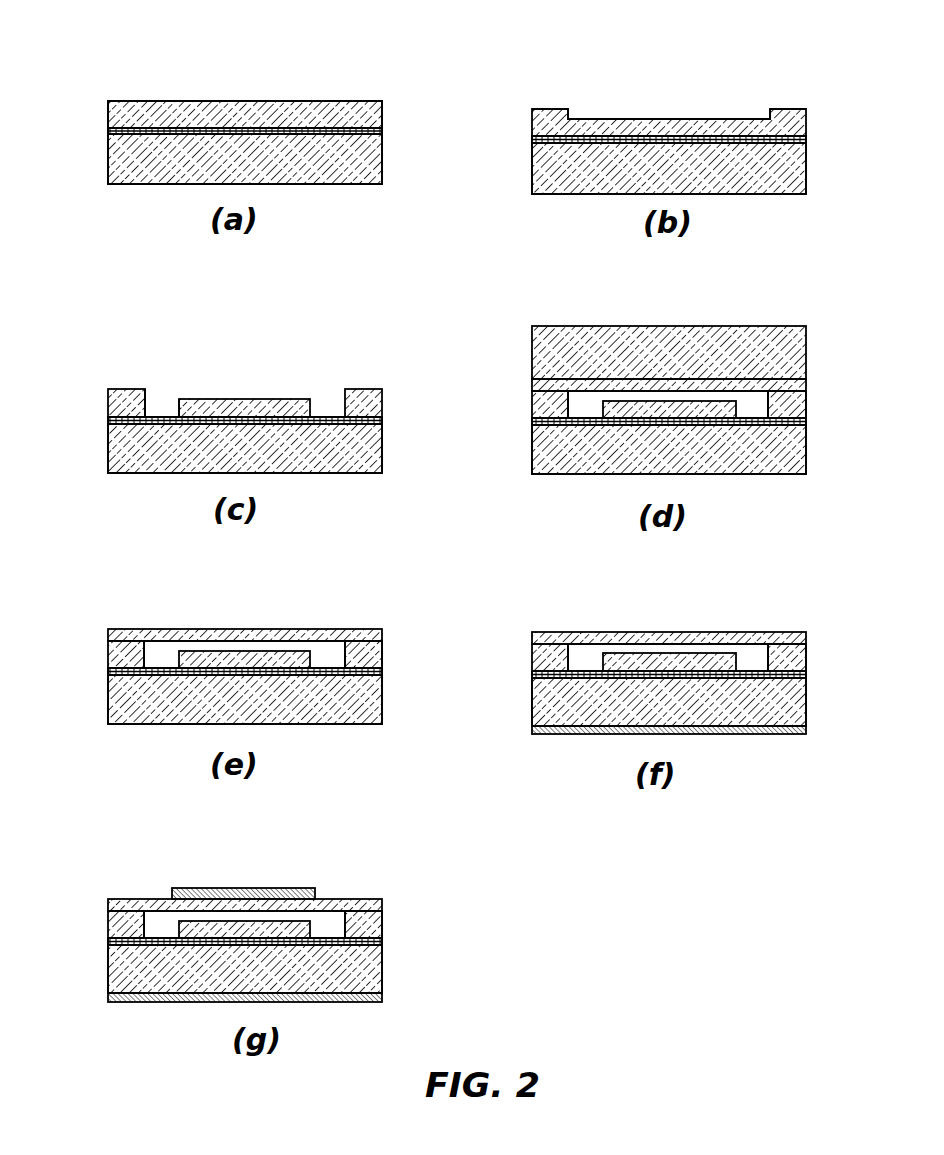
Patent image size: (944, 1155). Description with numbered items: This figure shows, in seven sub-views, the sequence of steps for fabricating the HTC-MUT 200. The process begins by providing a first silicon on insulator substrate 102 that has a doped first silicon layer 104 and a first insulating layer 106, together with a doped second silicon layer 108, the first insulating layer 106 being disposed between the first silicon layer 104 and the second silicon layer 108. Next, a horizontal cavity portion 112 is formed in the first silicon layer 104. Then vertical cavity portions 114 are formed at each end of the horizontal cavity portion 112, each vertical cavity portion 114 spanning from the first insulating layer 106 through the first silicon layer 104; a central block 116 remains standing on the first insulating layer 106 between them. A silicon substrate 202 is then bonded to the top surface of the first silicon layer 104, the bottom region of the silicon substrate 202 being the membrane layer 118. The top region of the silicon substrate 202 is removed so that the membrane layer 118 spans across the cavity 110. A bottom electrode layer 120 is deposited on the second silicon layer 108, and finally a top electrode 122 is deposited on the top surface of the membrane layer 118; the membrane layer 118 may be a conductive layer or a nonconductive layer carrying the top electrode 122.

The HTC-MUT 200 is at (114, 66).
The silicon substrate 202 is at (517, 342).
The first silicon on insulator (SOI) substrate 102 is at (104, 123).
The first silicon layer 104 is at (383, 112).
The first insulating layer 106 is at (108, 133).
The second silicon layer 108 is at (383, 157).
The cavity 110 is at (583, 407).
The horizontal cavity portion 112 is at (643, 108).
The vertical cavity portions 114 is at (347, 393).
The bottom electrode / center block 116 is at (233, 398).
The membrane layer 118 is at (742, 382).
The bottom electrode layer 120 is at (577, 737).
The top electrode 122 is at (285, 888).